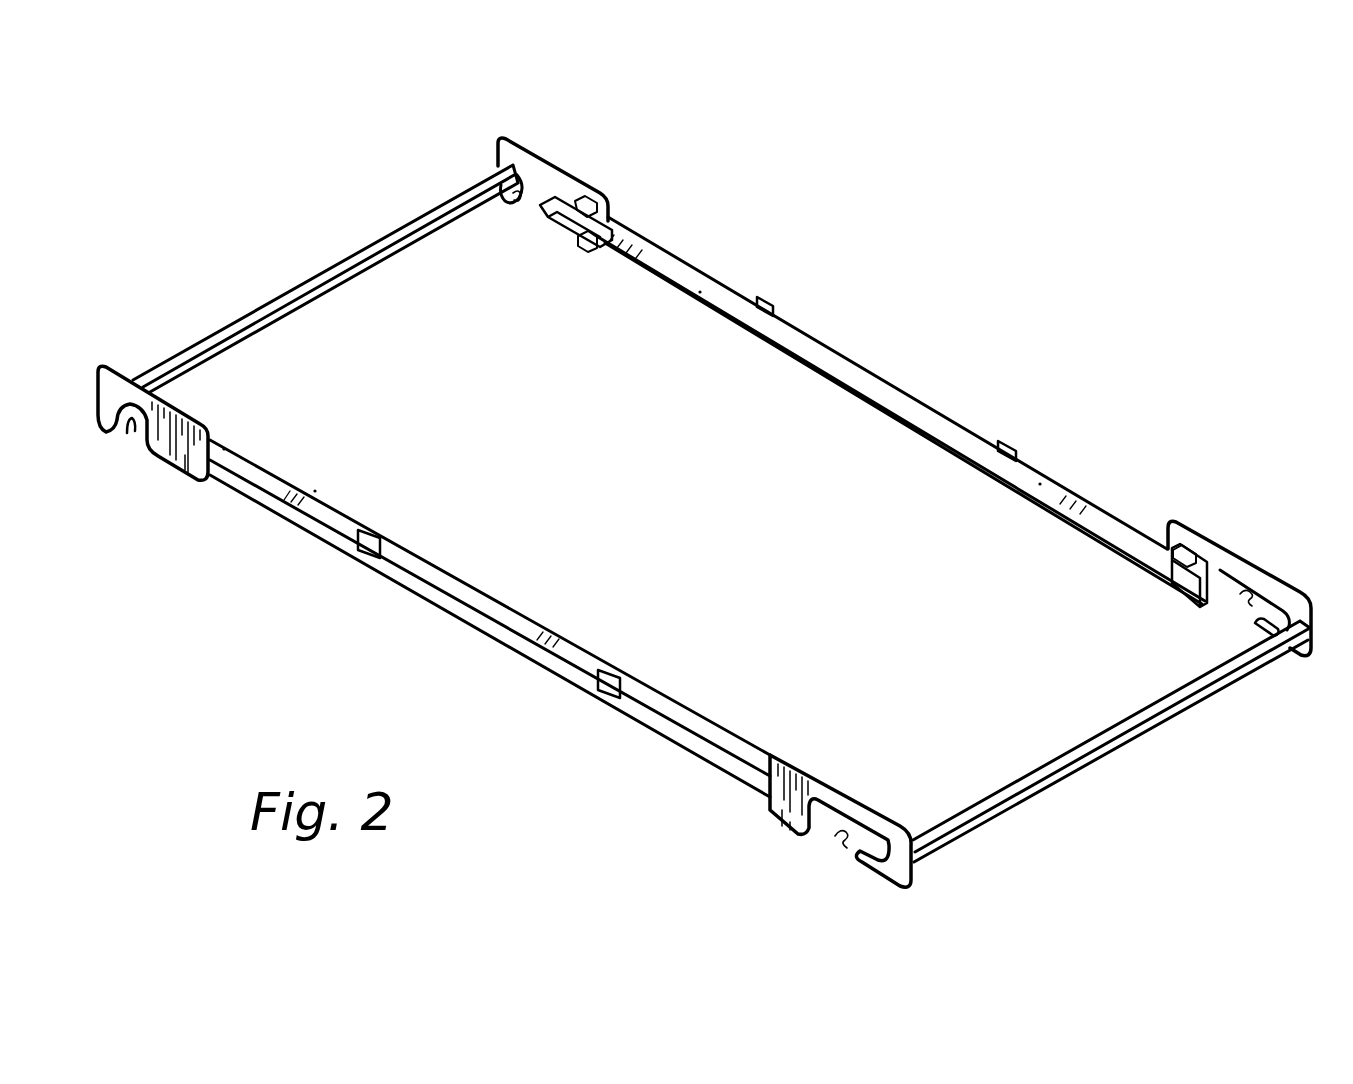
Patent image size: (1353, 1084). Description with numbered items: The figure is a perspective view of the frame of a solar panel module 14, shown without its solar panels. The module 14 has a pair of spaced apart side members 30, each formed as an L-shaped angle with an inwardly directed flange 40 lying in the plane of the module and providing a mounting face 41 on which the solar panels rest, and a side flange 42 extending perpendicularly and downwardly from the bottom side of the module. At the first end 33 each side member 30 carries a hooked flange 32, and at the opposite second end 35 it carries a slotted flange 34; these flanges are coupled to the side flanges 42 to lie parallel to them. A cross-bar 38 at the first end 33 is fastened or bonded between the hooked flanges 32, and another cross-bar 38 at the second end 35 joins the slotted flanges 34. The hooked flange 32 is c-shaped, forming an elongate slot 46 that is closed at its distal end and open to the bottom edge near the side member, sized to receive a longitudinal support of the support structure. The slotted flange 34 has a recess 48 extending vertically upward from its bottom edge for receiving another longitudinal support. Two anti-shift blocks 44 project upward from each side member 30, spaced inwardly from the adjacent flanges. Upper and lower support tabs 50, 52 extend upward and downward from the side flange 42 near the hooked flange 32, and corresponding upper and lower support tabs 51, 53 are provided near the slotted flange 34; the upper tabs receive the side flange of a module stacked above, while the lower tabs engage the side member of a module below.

The solar panel module 14 is at (1045, 301).
The side member 30 is at (1140, 533).
The hooked flange 32 is at (893, 879).
The first end 33 is at (1292, 528).
The slotted flange 34 is at (169, 470).
The second end 35 is at (439, 162).
The cross-bar 38 is at (320, 270).
The inwardly directed flange 40 is at (921, 405).
The mounting face 41 is at (836, 376).
The side flange 42 is at (525, 659).
The anti-shift block 44 is at (778, 304).
The elongate slot 46 is at (840, 842).
The recess 48 is at (129, 438).
The upper support tab 50 is at (1182, 536).
The upper support tab 51 is at (602, 202).
The lower support tab 52 is at (1181, 596).
The lower support tab 53 is at (583, 252).